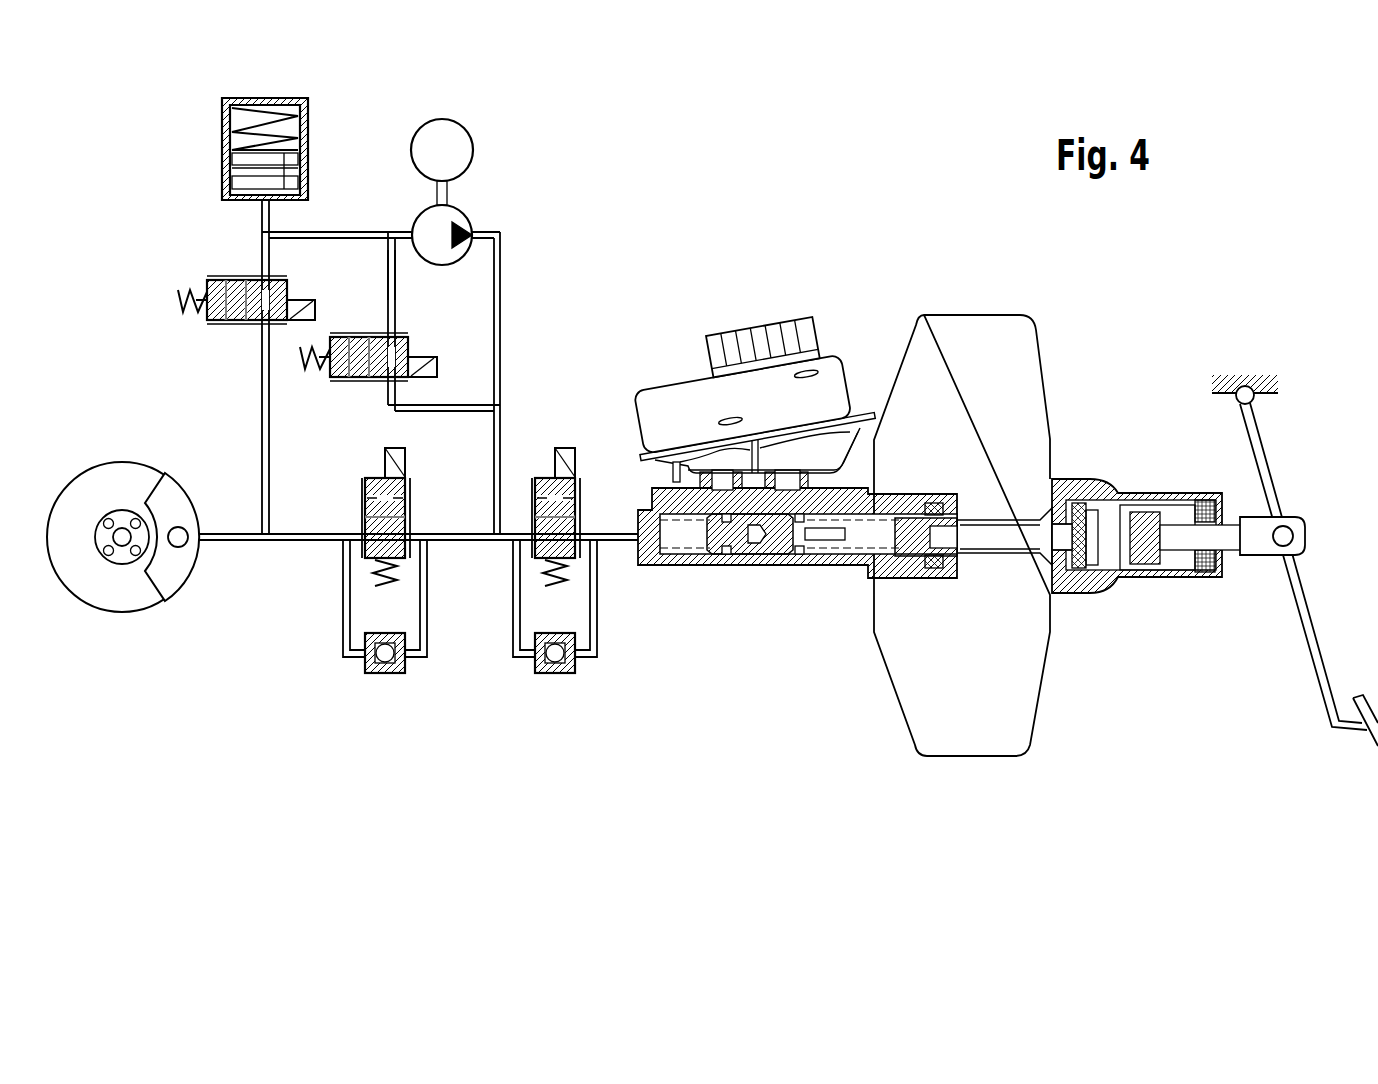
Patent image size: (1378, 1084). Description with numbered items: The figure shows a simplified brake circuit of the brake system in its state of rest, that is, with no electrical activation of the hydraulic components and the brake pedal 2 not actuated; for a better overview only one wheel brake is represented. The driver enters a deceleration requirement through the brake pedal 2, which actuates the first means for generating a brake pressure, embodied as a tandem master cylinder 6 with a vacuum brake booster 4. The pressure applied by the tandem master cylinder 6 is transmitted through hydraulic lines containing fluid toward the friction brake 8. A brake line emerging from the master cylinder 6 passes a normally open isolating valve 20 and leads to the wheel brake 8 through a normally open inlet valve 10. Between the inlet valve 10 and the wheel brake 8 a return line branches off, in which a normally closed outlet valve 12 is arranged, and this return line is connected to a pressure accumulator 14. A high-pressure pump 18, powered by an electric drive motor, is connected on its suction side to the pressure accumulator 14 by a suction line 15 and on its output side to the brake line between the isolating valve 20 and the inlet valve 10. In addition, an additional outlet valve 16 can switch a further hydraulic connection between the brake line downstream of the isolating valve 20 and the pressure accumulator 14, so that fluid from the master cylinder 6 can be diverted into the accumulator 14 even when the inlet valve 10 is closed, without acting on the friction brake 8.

The brake pedal 2 is at (1318, 672).
The vacuum brake booster 4 is at (969, 723).
The tandem master cylinder 6 is at (770, 568).
The friction brake 8 is at (172, 574).
The inlet valve 10 is at (398, 527).
The outlet valve 12 is at (258, 312).
The pressure accumulator 14 is at (222, 133).
The suction line 15 is at (394, 290).
The additional outlet valve 16 is at (377, 345).
The pump 18 is at (463, 209).
The isolating valve 20 is at (568, 527).